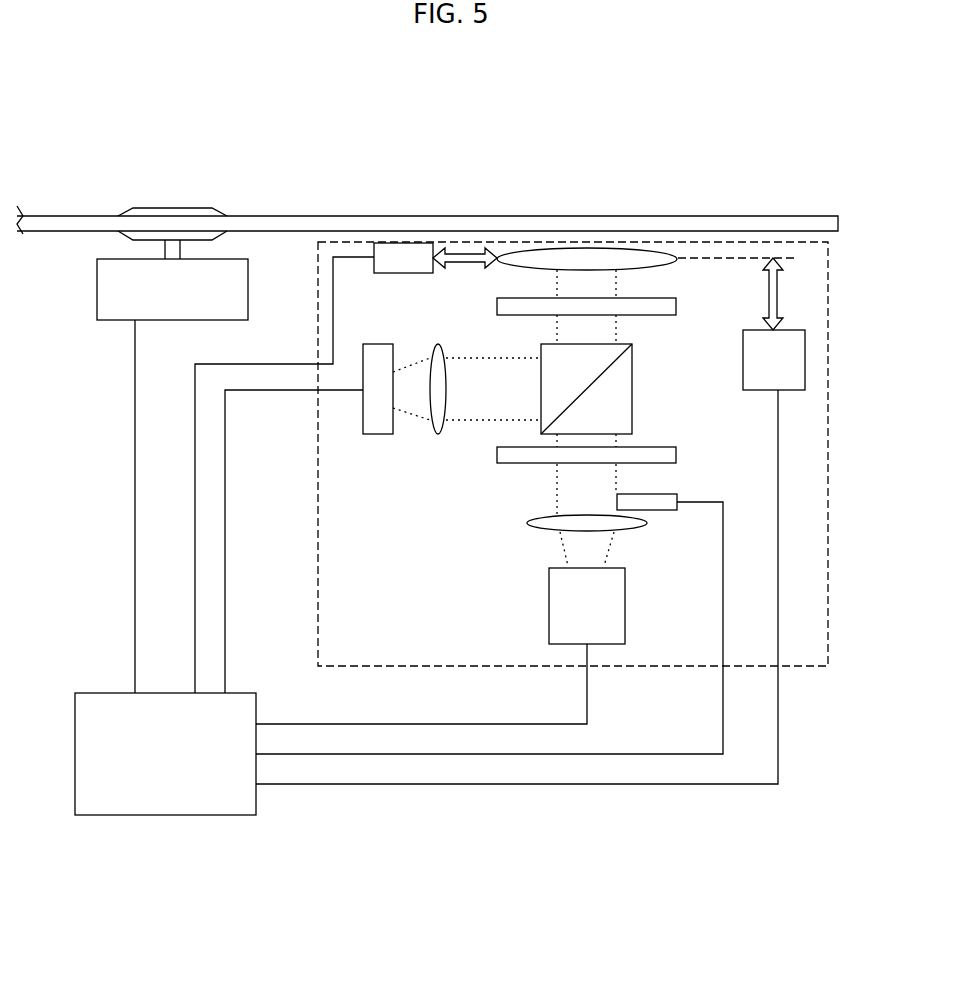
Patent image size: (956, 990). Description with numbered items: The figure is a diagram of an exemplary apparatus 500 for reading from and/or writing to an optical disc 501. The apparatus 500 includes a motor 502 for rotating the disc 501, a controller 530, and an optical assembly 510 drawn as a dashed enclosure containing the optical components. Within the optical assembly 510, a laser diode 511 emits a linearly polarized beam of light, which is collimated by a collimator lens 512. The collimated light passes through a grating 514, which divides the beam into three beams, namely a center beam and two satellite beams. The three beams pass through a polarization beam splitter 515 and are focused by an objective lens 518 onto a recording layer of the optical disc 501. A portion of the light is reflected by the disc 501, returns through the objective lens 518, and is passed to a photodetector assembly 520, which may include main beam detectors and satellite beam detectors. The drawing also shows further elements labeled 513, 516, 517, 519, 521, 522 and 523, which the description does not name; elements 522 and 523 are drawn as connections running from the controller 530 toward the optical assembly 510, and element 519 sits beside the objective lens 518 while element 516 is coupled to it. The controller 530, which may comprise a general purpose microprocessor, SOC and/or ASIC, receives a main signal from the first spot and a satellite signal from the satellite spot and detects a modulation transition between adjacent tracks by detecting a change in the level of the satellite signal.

The apparatus 500 is at (698, 116).
The optical disc 501 is at (820, 217).
The motor 502 is at (228, 320).
The optical assembly 510 is at (318, 513).
The laser diode 511 is at (625, 600).
The collimator lens 512 is at (635, 530).
The actuator 513 is at (650, 494).
The grating 514 is at (647, 447).
The polarization beam splitter 515 is at (632, 380).
The focus actuator 516 is at (745, 375).
The quarter wave plate 517 is at (657, 315).
The objective lens 518 is at (545, 273).
The lens actuator 519 is at (405, 275).
The photodetector assembly 520 is at (378, 343).
The collimator lens 521 is at (437, 343).
The control line 522 is at (195, 405).
The control line 523 is at (225, 440).
The controller 530 is at (228, 815).